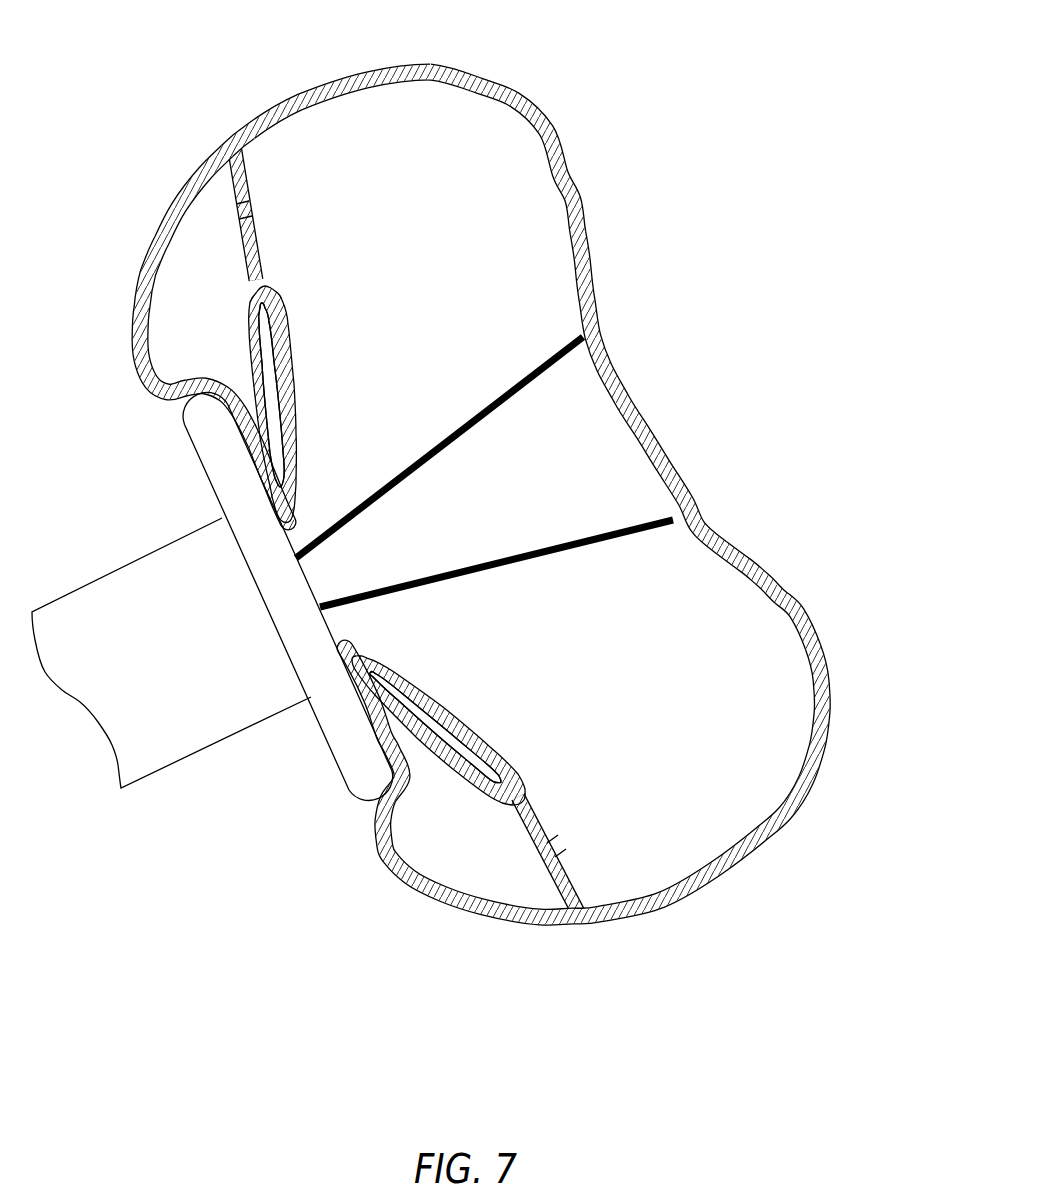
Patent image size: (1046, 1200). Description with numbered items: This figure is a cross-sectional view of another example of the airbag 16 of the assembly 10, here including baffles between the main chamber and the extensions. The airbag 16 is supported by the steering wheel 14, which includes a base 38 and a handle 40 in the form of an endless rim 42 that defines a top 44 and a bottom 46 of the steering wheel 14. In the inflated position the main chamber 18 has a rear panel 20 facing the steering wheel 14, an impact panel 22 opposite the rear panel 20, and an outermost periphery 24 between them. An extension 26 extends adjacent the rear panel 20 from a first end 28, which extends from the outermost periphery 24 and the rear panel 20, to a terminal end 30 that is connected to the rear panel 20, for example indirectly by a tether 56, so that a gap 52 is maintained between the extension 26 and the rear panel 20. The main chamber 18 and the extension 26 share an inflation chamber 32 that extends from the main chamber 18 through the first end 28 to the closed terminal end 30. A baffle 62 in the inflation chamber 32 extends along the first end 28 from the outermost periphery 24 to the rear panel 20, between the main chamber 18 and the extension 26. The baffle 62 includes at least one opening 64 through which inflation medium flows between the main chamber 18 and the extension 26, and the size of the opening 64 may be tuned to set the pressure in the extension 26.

The assembly 10 is at (750, 83).
The steering wheel 14 is at (212, 619).
The airbag 16 is at (549, 110).
The main chamber 18 is at (829, 762).
The rear panel 20 is at (268, 347).
The impact panel 22 is at (642, 415).
The outermost periphery 24 is at (373, 64).
The extension 26 is at (127, 340).
The first end 28 is at (226, 133).
The terminal end 30 is at (281, 470).
The inflation chamber 32 is at (720, 630).
The base 38 is at (190, 728).
The handle 40 is at (288, 596).
The rim 42 is at (352, 737).
The top 44 is at (147, 418).
The bottom 46 is at (354, 800).
The gap 52 is at (264, 322).
The tether 56 is at (292, 503).
The baffle 62 is at (248, 178).
The opening 64 is at (252, 217).